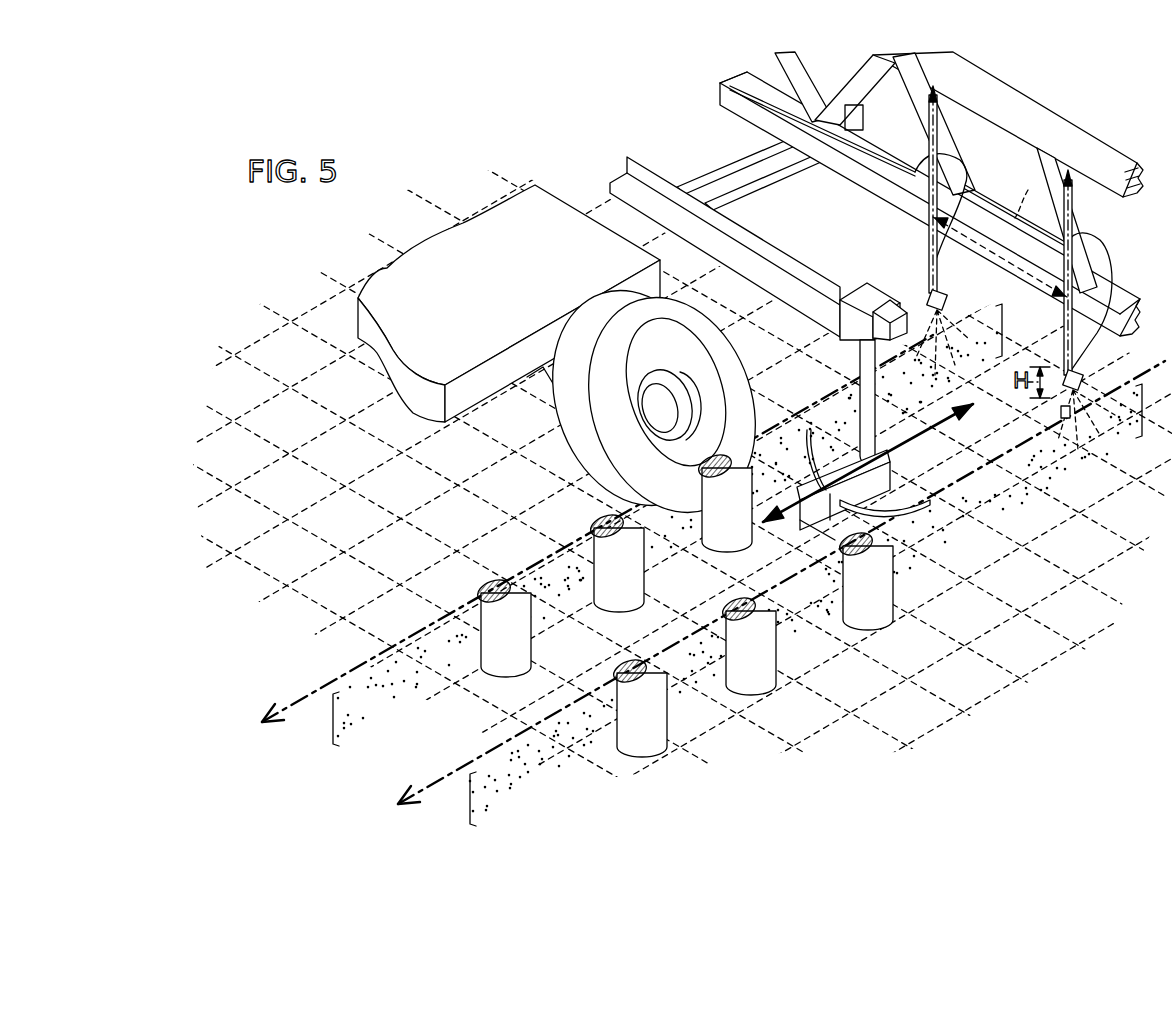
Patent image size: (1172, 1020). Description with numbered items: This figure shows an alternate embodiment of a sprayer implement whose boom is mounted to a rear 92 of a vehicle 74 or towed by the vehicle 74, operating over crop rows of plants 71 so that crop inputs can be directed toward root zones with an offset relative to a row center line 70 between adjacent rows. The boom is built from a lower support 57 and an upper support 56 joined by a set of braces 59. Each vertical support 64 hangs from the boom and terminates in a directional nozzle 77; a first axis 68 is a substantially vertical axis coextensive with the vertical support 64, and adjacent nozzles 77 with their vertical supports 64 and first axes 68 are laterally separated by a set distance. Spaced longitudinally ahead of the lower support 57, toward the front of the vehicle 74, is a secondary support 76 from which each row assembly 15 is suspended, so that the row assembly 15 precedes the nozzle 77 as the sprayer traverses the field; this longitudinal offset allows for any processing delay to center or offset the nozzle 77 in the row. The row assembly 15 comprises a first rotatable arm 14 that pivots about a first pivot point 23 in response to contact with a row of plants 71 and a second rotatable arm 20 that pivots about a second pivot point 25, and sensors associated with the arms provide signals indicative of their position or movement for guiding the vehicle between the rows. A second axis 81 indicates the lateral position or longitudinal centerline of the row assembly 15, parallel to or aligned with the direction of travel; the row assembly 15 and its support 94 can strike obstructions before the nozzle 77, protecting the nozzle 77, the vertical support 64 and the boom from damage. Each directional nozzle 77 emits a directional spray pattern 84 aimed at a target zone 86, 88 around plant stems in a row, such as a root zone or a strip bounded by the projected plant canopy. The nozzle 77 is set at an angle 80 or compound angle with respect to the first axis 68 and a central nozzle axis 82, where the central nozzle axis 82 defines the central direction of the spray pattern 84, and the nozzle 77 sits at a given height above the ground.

The first rotatable arm 14 is at (752, 413).
The row assembly 15 is at (907, 507).
The second rotatable arm 20 is at (880, 507).
The first pivot point 23 is at (815, 452).
The second pivot point 25 is at (800, 520).
The upper support 56 is at (1052, 118).
The lower support 57 is at (875, 178).
The braces 59 is at (912, 103).
The vertical support 64 is at (930, 258).
The first axis 68 is at (930, 118).
The row center line 70 is at (313, 692).
The plants 71 is at (714, 519).
The vehicle 74 is at (509, 269).
The secondary support 76 is at (787, 253).
The directional nozzle 77 is at (927, 297).
The angle 80 is at (945, 270).
The second axis 81 is at (922, 428).
The central nozzle axis 82 is at (1023, 366).
The directional spray pattern 84 is at (895, 300).
The target zone 86 is at (362, 702).
The target zone 88 is at (513, 777).
The rear 92 is at (557, 203).
The support 94 is at (858, 373).